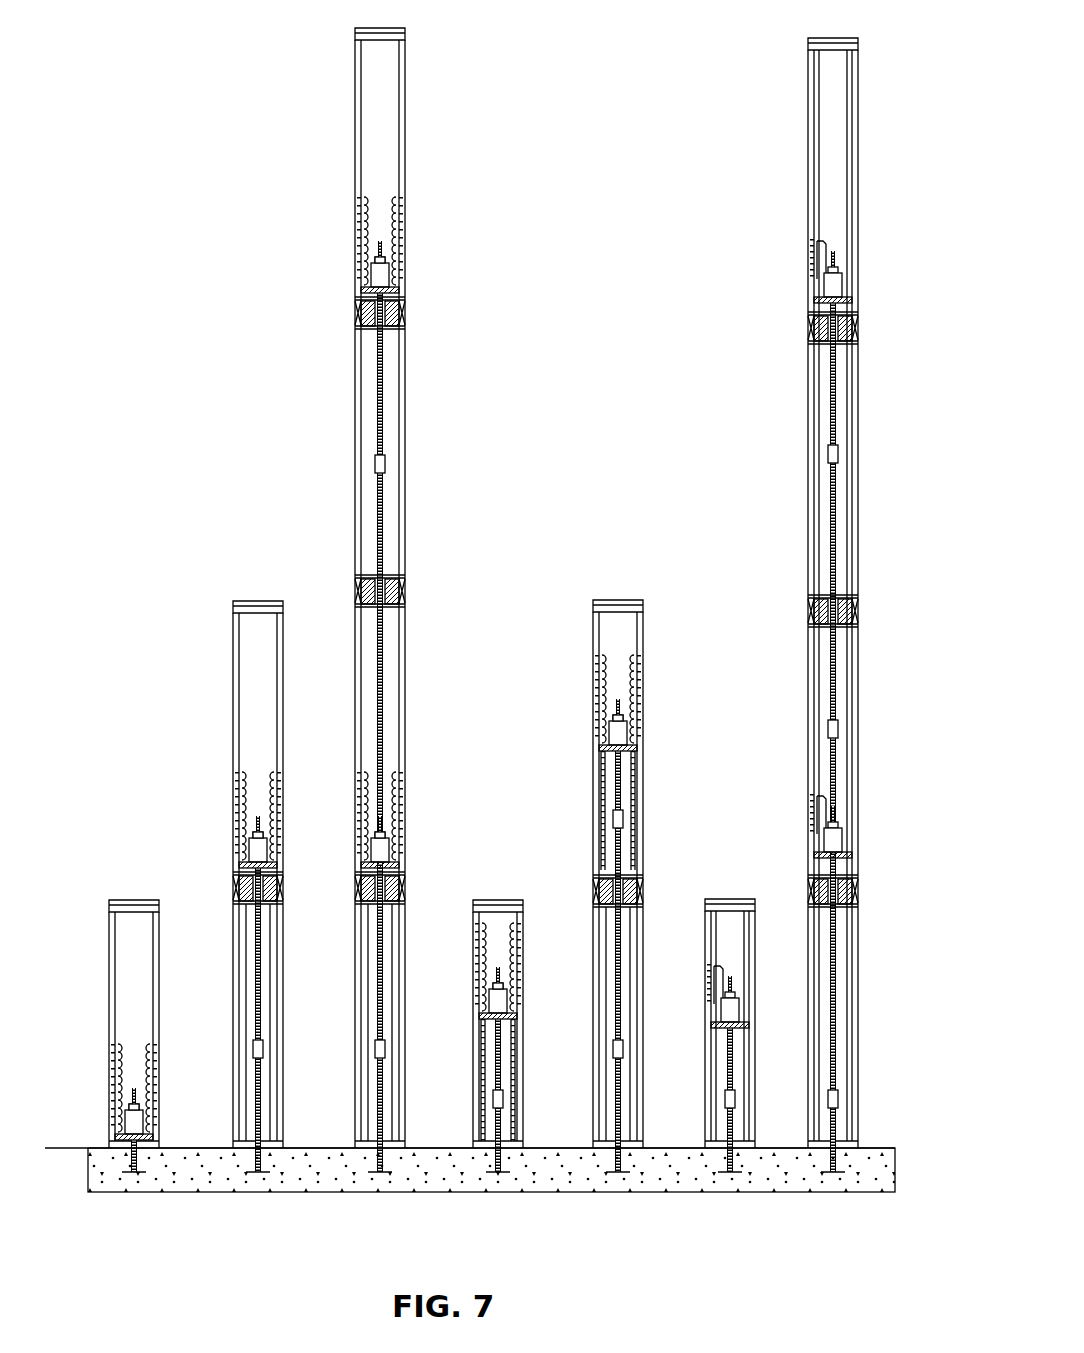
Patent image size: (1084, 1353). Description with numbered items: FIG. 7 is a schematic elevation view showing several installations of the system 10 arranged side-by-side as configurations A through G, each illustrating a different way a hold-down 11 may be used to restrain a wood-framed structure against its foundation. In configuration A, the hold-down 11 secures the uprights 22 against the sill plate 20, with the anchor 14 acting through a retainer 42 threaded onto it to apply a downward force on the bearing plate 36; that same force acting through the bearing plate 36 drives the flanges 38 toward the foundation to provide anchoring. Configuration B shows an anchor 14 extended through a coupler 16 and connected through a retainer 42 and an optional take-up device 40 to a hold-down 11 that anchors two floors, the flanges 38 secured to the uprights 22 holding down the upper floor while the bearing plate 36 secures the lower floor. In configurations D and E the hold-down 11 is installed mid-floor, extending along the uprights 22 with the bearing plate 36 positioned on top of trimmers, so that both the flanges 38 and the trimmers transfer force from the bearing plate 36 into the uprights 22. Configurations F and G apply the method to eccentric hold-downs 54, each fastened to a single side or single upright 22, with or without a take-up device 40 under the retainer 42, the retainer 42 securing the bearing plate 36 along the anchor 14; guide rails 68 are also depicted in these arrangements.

The system 10 is at (597, 205).
The hold-down 11 is at (158, 1040).
The anchor 14 is at (142, 1080).
The coupler 16 is at (263, 1052).
The sill plate 20 is at (160, 1149).
The upright 22 is at (162, 938).
The bearing plate 36 is at (150, 1138).
The flange 38 is at (116, 1052).
The take-up device 40 is at (140, 1120).
The retainer 42 is at (140, 1100).
The eccentric hold-down 54 is at (735, 975).
The guide rails 68 is at (510, 1045).